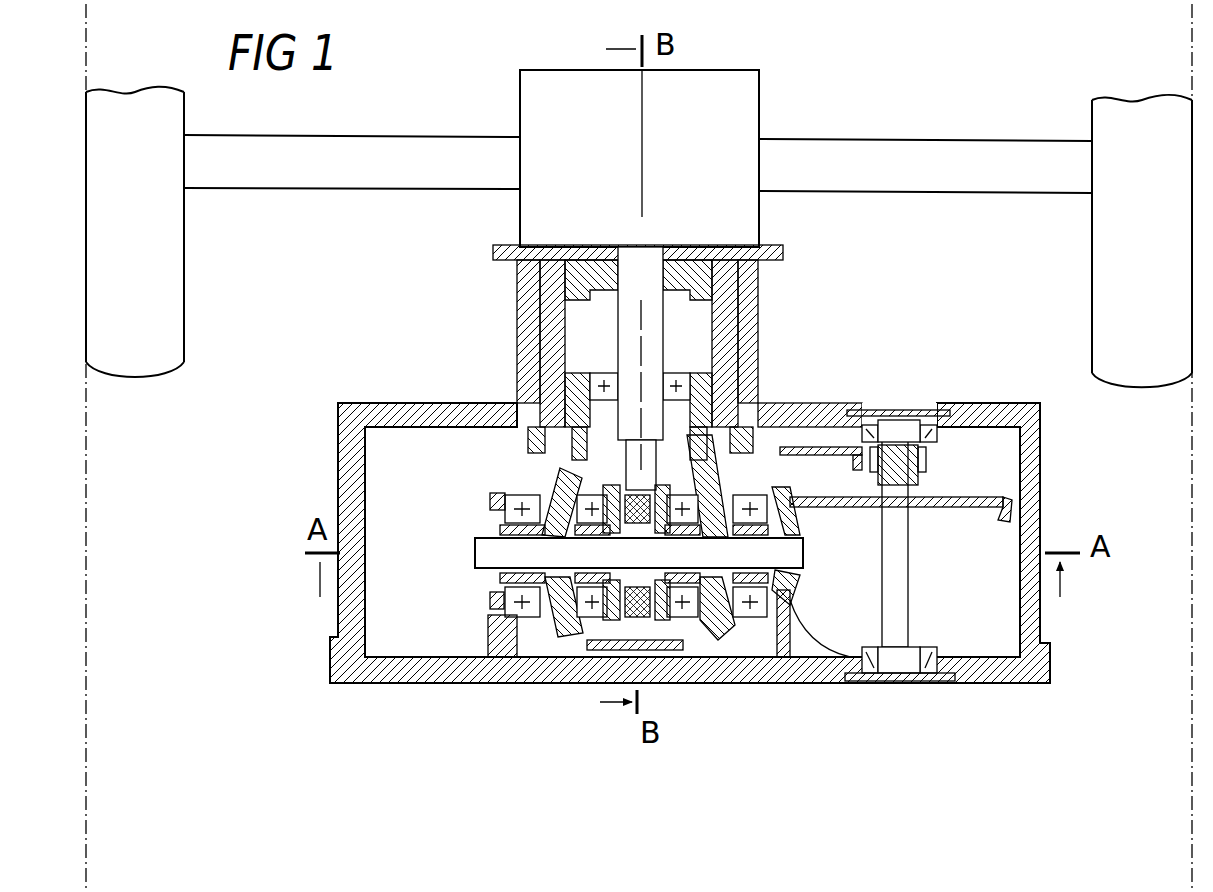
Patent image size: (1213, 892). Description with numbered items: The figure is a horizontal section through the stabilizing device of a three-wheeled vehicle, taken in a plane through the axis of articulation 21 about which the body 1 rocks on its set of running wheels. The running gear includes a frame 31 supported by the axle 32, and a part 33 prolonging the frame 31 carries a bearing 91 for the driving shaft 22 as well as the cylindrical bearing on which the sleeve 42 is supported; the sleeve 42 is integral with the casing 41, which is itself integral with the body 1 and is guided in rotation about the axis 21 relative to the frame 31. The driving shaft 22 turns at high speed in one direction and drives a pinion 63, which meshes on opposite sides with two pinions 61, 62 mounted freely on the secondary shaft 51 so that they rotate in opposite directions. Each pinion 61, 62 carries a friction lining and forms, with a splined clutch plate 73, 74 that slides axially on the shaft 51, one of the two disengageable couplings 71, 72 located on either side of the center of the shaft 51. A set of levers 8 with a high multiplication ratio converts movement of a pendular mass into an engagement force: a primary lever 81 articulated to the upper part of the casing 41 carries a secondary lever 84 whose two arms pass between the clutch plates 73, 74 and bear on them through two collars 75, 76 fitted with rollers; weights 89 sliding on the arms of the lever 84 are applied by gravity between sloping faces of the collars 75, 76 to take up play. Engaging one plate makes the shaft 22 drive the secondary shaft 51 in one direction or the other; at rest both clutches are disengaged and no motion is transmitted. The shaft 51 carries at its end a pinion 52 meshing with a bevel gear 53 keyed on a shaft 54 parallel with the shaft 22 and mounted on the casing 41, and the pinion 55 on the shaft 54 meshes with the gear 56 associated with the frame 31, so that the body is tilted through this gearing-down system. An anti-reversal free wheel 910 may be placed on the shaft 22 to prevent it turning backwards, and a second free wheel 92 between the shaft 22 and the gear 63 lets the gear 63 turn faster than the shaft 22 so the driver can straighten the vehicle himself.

The body 1 is at (1188, 622).
The set of levers 8 is at (612, 652).
The axis of articulation 21 is at (640, 125).
The driving shaft 22 is at (625, 305).
The frame 31 is at (677, 130).
The axle 32 is at (795, 162).
The part prolonging the frame 33 is at (750, 268).
The casing 41 is at (1043, 477).
The sleeve 42 is at (517, 288).
The secondary shaft 51 is at (512, 553).
The pinion 52 is at (788, 610).
The bevel gear 53 is at (935, 528).
The shaft 54 is at (903, 600).
The pinion 55 is at (918, 465).
The gear 56 is at (858, 408).
The pinion 61 is at (545, 483).
The pinion 62 is at (800, 445).
The pinion 63 is at (535, 385).
The disengageable coupling 71 is at (583, 622).
The disengageable coupling 72 is at (718, 632).
The clutch plate 73 is at (545, 618).
The clutch plate 74 is at (743, 627).
The collar 75 is at (510, 403).
The collar 76 is at (748, 450).
The primary lever 81 is at (690, 622).
The secondary lever 84 is at (712, 420).
The weight 89 is at (730, 440).
The bearing 91 is at (682, 372).
The second free wheel 92 is at (517, 348).
The anti-reversal free wheel 910 is at (680, 265).